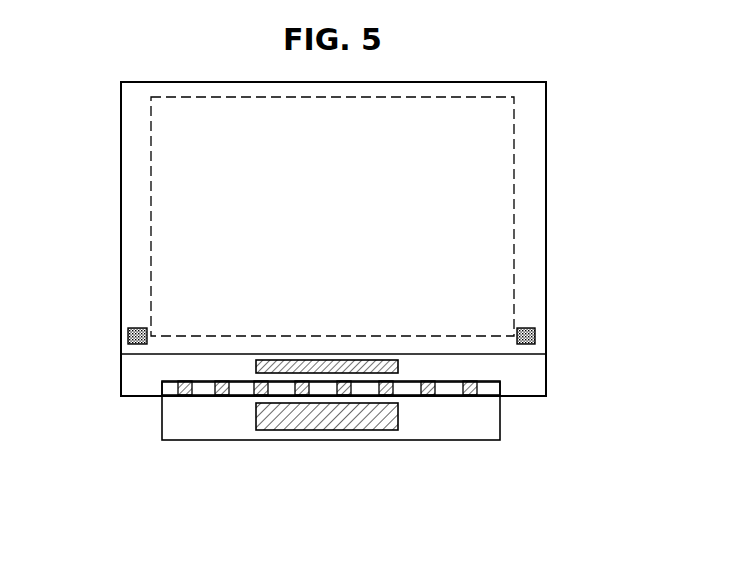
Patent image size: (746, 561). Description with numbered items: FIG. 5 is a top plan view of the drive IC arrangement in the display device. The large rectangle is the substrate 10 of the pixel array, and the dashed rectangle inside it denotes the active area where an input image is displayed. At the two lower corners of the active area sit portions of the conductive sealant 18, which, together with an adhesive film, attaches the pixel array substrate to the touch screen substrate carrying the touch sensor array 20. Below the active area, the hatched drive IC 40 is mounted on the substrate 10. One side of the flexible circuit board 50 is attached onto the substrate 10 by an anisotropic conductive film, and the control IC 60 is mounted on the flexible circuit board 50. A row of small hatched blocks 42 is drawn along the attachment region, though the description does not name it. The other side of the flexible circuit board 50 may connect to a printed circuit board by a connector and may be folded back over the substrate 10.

The substrate 10 is at (140, 396).
The conductive sealant 18 is at (128, 335).
The touch sensor array 20 is at (140, 354).
The drive IC 40 is at (278, 373).
The bump 42 is at (473, 396).
The flexible circuit board 50 is at (437, 420).
The control IC 60 is at (336, 420).